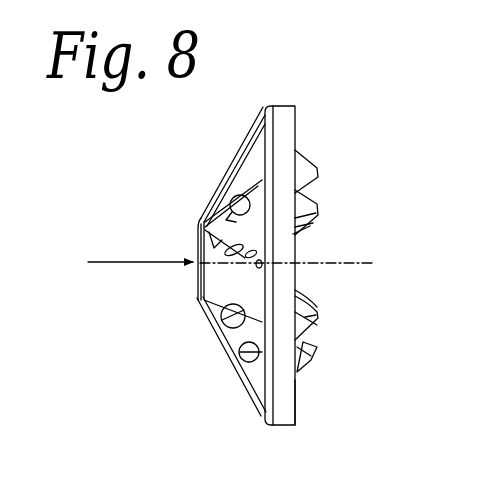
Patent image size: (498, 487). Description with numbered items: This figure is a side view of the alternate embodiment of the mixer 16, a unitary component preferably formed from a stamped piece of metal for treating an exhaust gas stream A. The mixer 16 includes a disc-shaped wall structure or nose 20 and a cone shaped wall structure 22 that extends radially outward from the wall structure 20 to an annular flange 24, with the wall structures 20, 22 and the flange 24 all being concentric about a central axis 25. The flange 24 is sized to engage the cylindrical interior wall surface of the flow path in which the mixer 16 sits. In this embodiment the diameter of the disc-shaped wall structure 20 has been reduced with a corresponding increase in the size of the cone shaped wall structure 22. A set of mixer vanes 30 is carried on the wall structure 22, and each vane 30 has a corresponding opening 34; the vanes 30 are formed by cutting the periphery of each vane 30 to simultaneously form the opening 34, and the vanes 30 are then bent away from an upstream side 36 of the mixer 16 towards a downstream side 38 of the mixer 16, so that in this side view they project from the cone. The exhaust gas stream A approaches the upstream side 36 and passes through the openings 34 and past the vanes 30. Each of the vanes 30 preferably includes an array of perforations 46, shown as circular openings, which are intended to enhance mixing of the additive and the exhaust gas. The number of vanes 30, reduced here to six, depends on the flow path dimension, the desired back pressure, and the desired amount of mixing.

The mixer 16 is at (327, 107).
The disc-shaped wall structure 20 is at (196, 238).
The cone shaped wall structure 22 is at (225, 185).
The annular flange 24 is at (287, 103).
The central axis 25 is at (347, 262).
The mixer vanes 30 is at (303, 160).
The opening 34 is at (255, 180).
The upstream side 36 is at (194, 296).
The downstream side 38 is at (298, 393).
The perforations 46 is at (225, 338).
The exhaust gas stream A is at (116, 263).